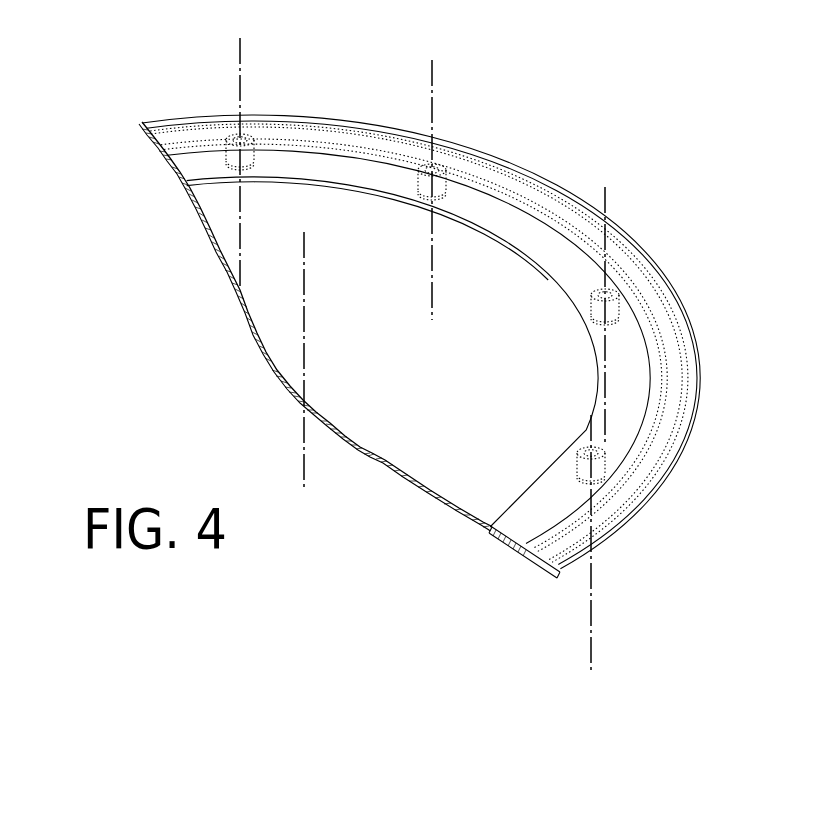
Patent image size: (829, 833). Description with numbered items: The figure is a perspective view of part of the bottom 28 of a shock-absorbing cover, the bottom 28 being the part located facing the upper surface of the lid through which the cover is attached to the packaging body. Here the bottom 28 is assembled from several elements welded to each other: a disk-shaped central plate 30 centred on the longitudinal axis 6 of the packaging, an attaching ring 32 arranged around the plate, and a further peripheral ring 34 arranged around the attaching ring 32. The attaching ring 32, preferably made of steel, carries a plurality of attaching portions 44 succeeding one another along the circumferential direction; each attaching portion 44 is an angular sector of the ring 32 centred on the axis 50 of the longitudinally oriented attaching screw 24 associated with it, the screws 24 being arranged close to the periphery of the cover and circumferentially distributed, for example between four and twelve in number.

The longitudinal axis 6 is at (304, 473).
The attaching screw 24 is at (253, 133).
The bottom 28 is at (267, 366).
The disk-shaped central plate 30 is at (225, 210).
The attaching ring 32 is at (199, 155).
The peripheral ring 34 is at (170, 128).
The attaching portion 44 is at (275, 161).
The axis of the screw 50 is at (240, 277).